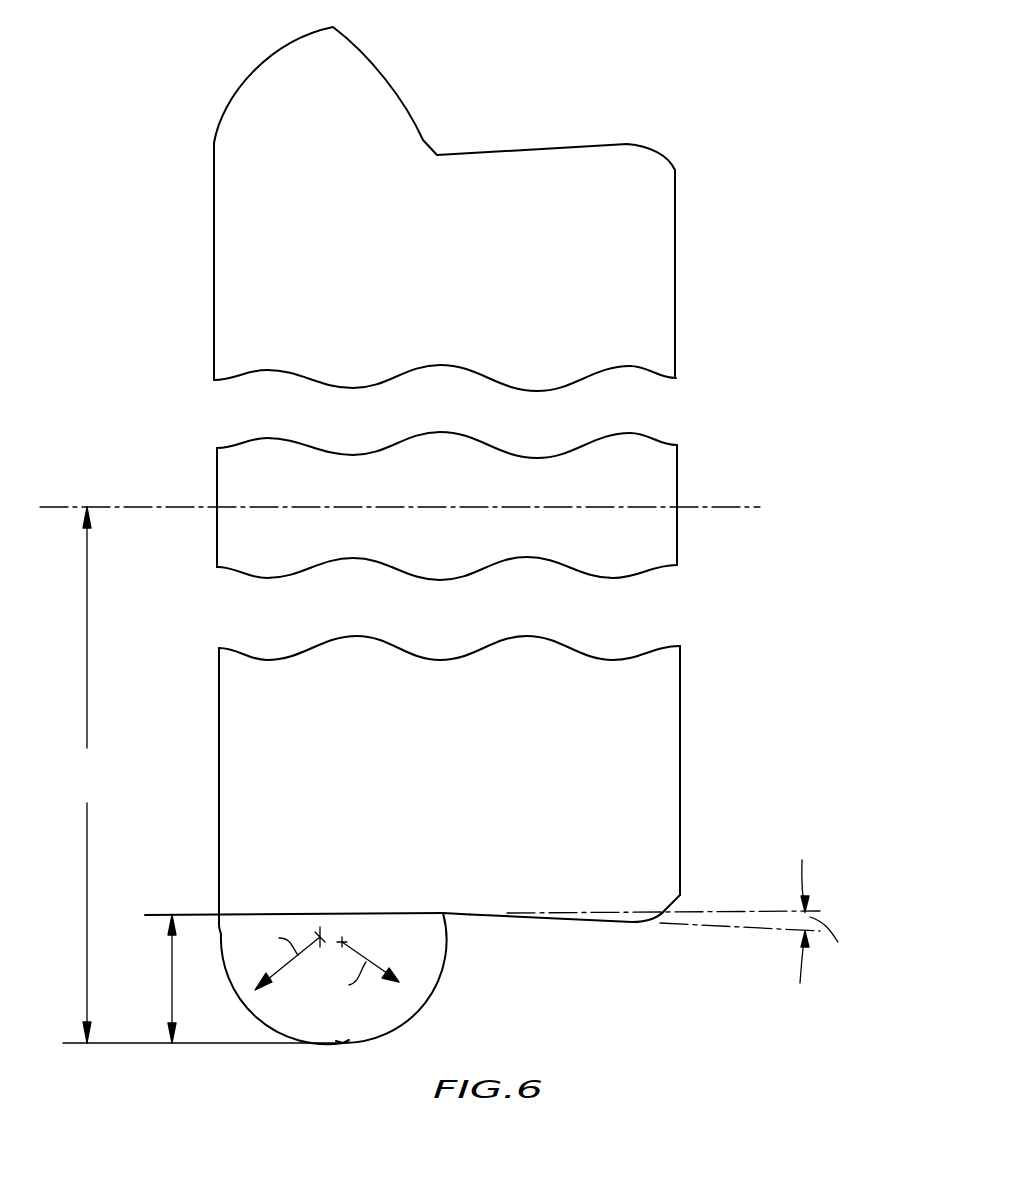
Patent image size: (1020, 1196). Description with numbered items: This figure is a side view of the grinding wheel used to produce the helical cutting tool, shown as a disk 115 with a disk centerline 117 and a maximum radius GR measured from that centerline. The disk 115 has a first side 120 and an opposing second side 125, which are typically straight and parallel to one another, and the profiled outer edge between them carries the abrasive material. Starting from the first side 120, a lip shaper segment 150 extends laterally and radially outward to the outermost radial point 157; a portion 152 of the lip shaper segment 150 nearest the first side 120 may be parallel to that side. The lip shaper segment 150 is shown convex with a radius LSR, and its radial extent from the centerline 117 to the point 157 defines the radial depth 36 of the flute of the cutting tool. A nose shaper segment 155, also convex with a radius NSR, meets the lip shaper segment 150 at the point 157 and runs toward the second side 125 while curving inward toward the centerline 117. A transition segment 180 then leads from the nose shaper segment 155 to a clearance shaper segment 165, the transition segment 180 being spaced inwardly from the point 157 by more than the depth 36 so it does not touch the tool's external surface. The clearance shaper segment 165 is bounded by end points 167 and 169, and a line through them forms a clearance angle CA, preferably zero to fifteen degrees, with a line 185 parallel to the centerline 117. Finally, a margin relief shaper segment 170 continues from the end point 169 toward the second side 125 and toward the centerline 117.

The disk 115 is at (213, 143).
The first side 120 is at (214, 290).
The second side 125 is at (676, 292).
The disk centerline 117 is at (50, 507).
The portion of the lip shaper segment 152 is at (216, 928).
The lip shaper segment 150 is at (243, 982).
The nose shaper segment 155 is at (397, 995).
The outermost radial point 157 is at (343, 1047).
The end point of the clearance shaper segment 167 is at (443, 913).
The transition segment 180 is at (445, 916).
The clearance shaper segment 165 is at (600, 923).
The end point of the clearance shaper segment 169 is at (647, 917).
The margin relief shaper segment 170 is at (660, 922).
The line parallel to the centerline 185 is at (815, 912).
The radial depth of the flute 36 is at (172, 975).
The maximum radius GR is at (88, 775).
The lip shaper segment radius LSR is at (284, 958).
The nose shaper segment radius NSR is at (355, 969).
The clearance angle CA is at (838, 942).